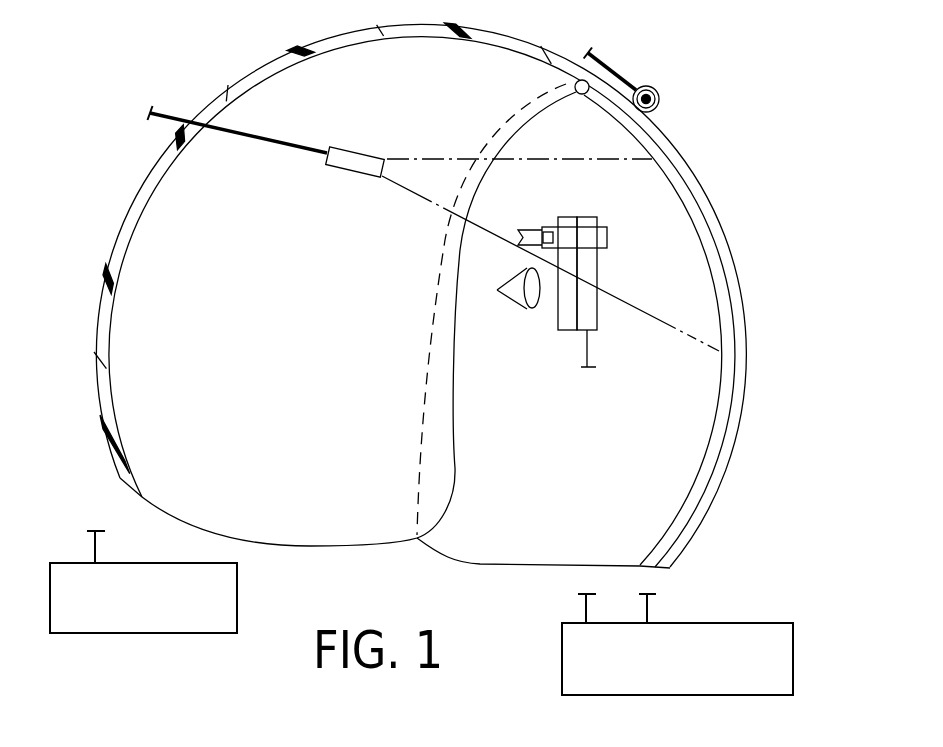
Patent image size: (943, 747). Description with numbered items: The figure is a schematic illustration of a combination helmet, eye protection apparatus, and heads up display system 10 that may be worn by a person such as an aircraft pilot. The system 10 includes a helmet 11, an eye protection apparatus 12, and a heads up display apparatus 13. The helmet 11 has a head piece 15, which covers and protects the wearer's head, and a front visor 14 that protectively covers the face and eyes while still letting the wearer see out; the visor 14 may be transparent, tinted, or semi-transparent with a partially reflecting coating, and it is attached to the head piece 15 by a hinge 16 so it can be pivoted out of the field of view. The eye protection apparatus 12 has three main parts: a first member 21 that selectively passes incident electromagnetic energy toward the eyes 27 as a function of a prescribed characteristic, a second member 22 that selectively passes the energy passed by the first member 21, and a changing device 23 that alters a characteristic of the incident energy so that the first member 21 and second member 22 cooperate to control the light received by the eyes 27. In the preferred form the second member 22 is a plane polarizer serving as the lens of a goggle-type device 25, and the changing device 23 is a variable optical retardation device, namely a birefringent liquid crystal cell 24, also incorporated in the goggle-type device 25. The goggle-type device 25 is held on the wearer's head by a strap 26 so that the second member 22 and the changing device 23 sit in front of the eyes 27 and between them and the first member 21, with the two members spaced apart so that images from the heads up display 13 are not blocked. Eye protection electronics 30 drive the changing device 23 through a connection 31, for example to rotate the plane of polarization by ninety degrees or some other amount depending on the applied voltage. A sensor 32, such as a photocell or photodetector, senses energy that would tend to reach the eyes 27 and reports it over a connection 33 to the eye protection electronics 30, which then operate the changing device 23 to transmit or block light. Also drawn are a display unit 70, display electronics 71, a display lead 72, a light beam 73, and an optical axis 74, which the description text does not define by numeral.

The combination helmet, eye protection apparatus, and heads up display system 10 is at (706, 156).
The helmet 11 is at (519, 46).
The eye protection apparatus 12 is at (658, 373).
The heads up display apparatus 13 is at (317, 169).
The front visor 14 is at (710, 262).
The head piece 15 is at (252, 72).
The hinge 16 is at (542, 85).
The first member 21 is at (744, 318).
The second member 22 is at (560, 318).
The changing device 23 is at (592, 320).
The liquid crystal cell 24 is at (585, 217).
The goggle-type device 25 is at (552, 207).
The strap 26 is at (520, 232).
The eyes 27 is at (500, 283).
The eye protection electronics 30 is at (722, 622).
The connection 31 is at (585, 343).
The sensor 32 is at (659, 94).
The connection 33 is at (626, 76).
The display unit 70 is at (389, 118).
The display electronics 71 is at (128, 634).
The display lead 72 is at (240, 137).
The light beam 73 is at (658, 172).
The optical axis 74 is at (460, 152).